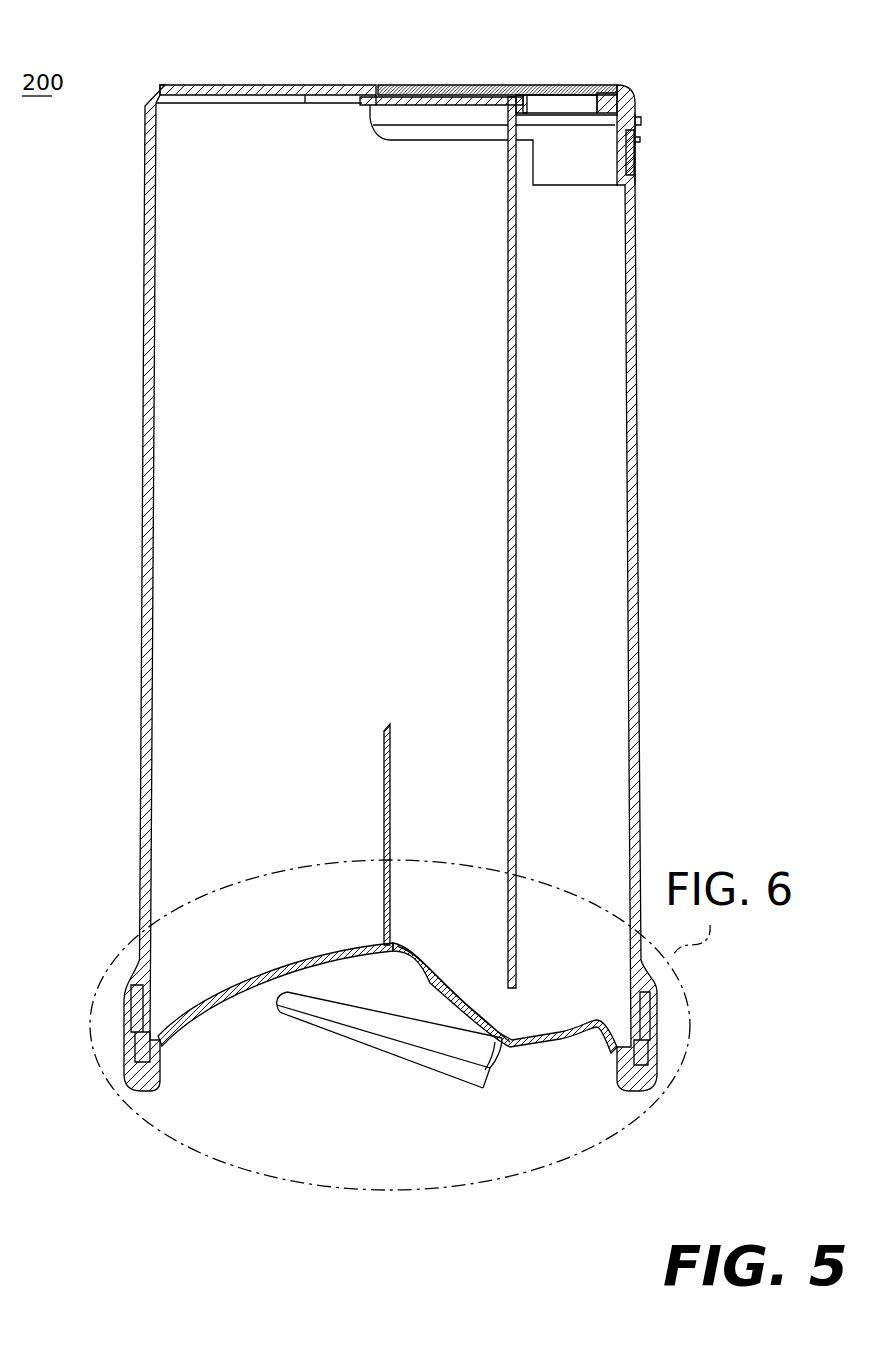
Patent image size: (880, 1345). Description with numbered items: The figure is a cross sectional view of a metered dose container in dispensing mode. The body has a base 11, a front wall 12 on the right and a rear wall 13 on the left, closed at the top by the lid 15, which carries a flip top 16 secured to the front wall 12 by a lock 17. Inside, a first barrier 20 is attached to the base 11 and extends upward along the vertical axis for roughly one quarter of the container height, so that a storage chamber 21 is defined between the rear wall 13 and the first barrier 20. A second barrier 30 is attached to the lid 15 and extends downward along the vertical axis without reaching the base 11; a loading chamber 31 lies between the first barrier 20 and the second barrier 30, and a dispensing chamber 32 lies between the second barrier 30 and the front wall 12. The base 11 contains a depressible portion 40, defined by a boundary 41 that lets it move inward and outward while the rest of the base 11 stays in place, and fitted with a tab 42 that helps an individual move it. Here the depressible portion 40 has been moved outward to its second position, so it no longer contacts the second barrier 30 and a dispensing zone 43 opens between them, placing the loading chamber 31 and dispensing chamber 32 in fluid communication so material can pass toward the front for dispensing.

The base 11 is at (192, 1022).
The front wall 12 is at (640, 410).
The rear wall 13 is at (143, 307).
The lid 15 is at (227, 85).
The flip top 16 is at (542, 85).
The lock 17 is at (636, 143).
The first barrier 20 is at (390, 728).
The storage chamber 21 is at (208, 530).
The second barrier 30 is at (515, 558).
The loading chamber 31 is at (460, 802).
The dispensing chamber 32 is at (580, 295).
The depressible portion 40 is at (567, 1042).
The boundary 41 is at (418, 957).
The tab 42 is at (297, 1013).
The dispensing zone 43 is at (515, 1013).